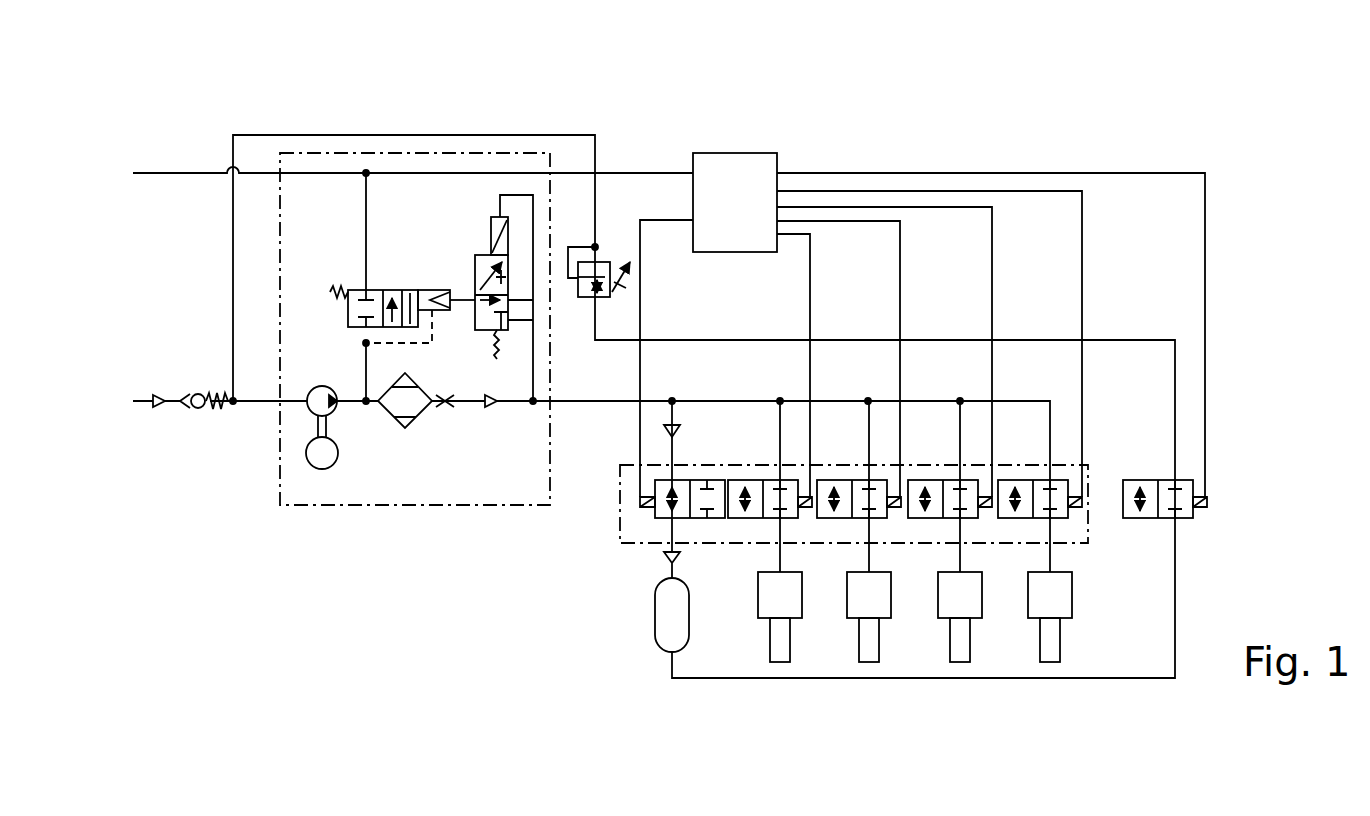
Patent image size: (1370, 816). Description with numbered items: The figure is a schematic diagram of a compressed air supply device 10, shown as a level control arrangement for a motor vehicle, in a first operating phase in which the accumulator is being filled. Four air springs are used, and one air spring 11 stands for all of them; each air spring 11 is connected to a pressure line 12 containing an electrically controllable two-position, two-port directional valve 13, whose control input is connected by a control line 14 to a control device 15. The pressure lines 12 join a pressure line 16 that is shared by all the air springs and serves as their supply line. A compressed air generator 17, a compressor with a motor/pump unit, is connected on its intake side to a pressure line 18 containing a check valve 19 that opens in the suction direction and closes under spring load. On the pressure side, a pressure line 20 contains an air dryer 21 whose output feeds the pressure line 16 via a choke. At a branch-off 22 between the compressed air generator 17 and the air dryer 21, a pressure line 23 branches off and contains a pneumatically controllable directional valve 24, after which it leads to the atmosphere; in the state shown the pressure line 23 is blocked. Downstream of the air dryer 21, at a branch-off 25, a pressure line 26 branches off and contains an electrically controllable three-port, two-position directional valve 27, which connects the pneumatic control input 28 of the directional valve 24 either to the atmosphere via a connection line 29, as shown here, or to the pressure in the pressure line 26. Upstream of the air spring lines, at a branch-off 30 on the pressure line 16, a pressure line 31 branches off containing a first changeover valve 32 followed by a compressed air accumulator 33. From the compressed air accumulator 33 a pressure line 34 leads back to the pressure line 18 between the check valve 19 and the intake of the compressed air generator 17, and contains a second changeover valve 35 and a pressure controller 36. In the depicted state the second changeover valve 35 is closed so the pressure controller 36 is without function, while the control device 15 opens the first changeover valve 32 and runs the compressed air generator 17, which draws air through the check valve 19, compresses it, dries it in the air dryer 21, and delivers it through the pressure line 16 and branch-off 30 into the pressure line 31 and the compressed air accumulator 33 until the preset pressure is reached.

The compressed air supply device 10 is at (1188, 128).
The air spring 11 is at (787, 645).
The pressure line 12 is at (778, 428).
The 2/2 directional valve 13 is at (752, 545).
The control line 14 is at (810, 297).
The control device 15 is at (735, 202).
The pressure line 16 is at (920, 401).
The compressed air generator 17 is at (312, 425).
The pressure line 18 is at (252, 405).
The check valve 19 is at (210, 408).
The pressure line 20 is at (356, 405).
The air dryer 21 is at (405, 430).
The branch-off 22 is at (369, 405).
The pressure line 23 is at (366, 217).
The 2/2 directional valve 24 is at (344, 322).
The branch-off 25 is at (530, 408).
The pressure line 26 is at (463, 290).
The 3/2 directional valve 27 is at (466, 322).
The pneumatic control input 28 is at (428, 290).
The connection line 29 is at (536, 184).
The branch-off 30 is at (672, 401).
The pressure line 31 is at (672, 453).
The first changeover valve 32 is at (658, 545).
The compressed air accumulator 33 is at (660, 633).
The pressure line 34 is at (352, 135).
The second changeover valve 35 is at (1146, 524).
The pressure controller 36 is at (612, 297).